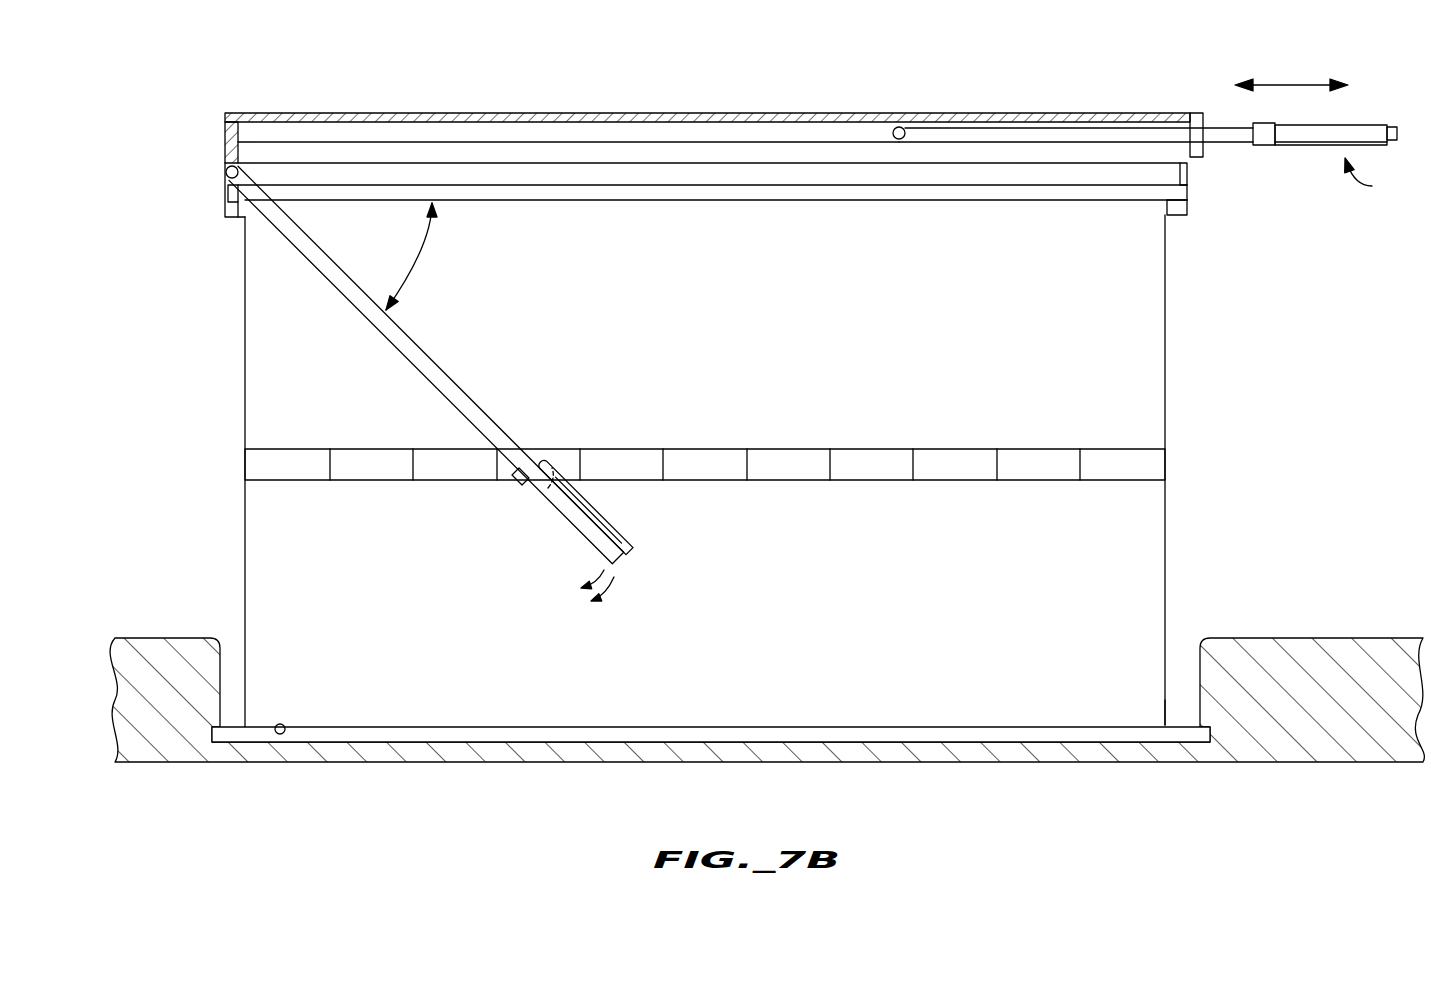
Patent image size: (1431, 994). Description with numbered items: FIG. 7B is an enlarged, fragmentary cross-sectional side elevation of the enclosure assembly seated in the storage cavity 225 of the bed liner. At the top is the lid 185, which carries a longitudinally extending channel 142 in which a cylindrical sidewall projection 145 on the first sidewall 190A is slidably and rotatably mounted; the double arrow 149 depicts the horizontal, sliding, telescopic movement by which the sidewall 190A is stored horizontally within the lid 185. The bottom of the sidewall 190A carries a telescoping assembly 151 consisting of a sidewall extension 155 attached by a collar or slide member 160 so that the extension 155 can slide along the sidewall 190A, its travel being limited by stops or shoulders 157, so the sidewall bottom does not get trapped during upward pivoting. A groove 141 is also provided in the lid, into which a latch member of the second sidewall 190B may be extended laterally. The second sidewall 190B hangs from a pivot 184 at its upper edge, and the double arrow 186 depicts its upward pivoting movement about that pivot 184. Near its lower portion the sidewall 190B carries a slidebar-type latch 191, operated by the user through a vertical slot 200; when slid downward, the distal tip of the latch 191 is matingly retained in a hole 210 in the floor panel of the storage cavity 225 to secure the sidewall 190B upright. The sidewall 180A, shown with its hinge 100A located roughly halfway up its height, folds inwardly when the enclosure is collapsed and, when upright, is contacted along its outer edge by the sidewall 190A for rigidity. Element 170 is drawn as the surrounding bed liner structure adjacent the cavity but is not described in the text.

The lid 185 is at (418, 113).
The channel 142 is at (545, 130).
The groove 141 is at (668, 175).
The first sidewall 190A is at (1063, 130).
The sidewall projection 145 is at (899, 127).
The slide member 160 is at (1263, 147).
The stops 157 is at (1275, 135).
The sidewall extension 155 is at (1298, 147).
The telescoping assembly 151 is at (1382, 178).
The double arrow 149 is at (1290, 85).
The pivot 184 is at (226, 172).
The second sidewall 190B is at (388, 342).
The double arrow 186 is at (418, 246).
The slidebar-type latch 191 is at (630, 531).
The vertical slot 200 is at (546, 492).
The hinge 100A is at (877, 449).
The first sidewall 180A is at (853, 627).
The base support 170 is at (1282, 638).
The storage cavity 225 is at (1180, 648).
The hole 210 is at (285, 726).